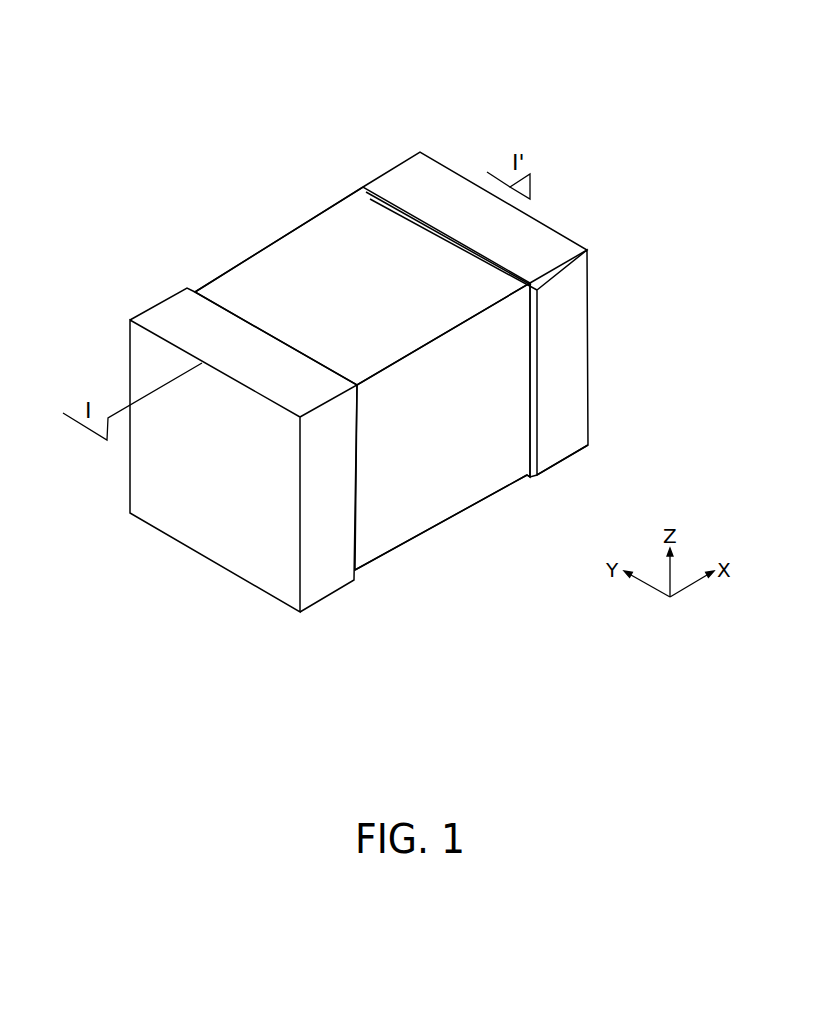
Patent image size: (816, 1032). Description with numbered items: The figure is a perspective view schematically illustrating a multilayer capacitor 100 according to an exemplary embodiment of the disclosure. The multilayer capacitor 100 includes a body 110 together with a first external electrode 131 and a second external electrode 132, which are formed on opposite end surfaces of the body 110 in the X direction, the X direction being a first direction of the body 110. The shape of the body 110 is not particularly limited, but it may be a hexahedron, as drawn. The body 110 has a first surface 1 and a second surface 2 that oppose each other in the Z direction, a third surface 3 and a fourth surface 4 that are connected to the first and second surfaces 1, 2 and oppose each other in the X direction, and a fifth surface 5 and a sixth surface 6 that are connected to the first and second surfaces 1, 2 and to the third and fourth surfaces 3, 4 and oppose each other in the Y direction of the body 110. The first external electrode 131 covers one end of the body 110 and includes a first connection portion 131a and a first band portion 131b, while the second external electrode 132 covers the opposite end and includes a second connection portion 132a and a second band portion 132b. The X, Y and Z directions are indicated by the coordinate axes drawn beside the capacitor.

The multilayer capacitor 100 is at (243, 61).
The body 110 is at (290, 256).
The first surface 1 is at (438, 529).
The second surface 2 is at (357, 242).
The third surface 3 is at (177, 461).
The fourth surface 4 is at (572, 230).
The fifth surface 5 is at (497, 429).
The sixth surface 6 is at (218, 265).
The first external electrode 131 is at (120, 577).
The first connection portion 131a is at (223, 564).
The first band portion 131b is at (317, 563).
The second external electrode 132 is at (672, 300).
The second connection portion 132a is at (589, 307).
The second band portion 132b is at (571, 373).